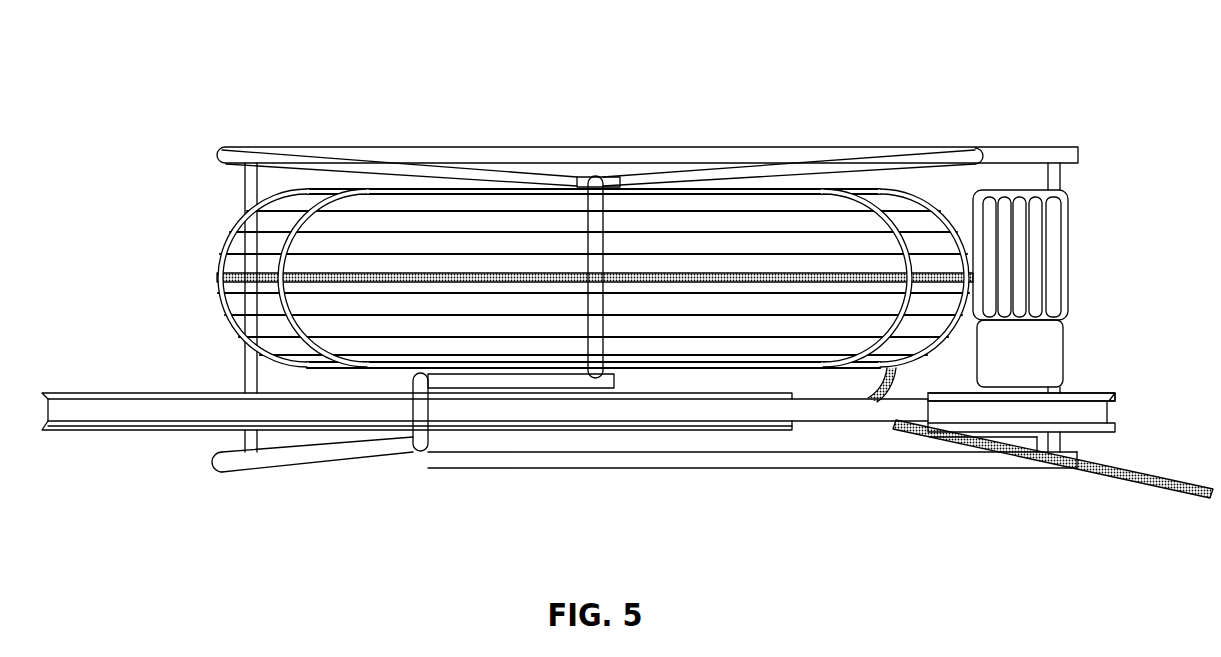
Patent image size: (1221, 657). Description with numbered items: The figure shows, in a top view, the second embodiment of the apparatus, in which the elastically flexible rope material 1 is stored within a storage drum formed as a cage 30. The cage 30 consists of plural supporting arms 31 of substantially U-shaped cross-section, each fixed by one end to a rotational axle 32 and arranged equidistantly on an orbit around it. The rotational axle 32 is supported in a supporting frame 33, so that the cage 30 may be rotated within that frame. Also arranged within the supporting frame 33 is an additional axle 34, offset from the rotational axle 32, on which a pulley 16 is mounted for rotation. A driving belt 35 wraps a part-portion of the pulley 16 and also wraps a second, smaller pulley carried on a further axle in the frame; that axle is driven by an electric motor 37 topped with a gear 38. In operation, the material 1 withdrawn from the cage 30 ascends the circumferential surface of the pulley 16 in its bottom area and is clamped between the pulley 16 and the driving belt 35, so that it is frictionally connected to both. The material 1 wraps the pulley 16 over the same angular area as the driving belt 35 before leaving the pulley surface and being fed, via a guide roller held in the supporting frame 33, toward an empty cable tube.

The elastically flexible rope material 1 is at (720, 334).
The pulley 16 is at (62, 427).
The cage 30 is at (156, 288).
The supporting arms 31 is at (303, 197).
The rotational axle 32 is at (603, 168).
The supporting frame 33 is at (717, 156).
The additional axle 34 is at (430, 437).
The driving belt 35 is at (823, 410).
The electric motor 37 is at (1070, 285).
The gear 38 is at (1065, 360).